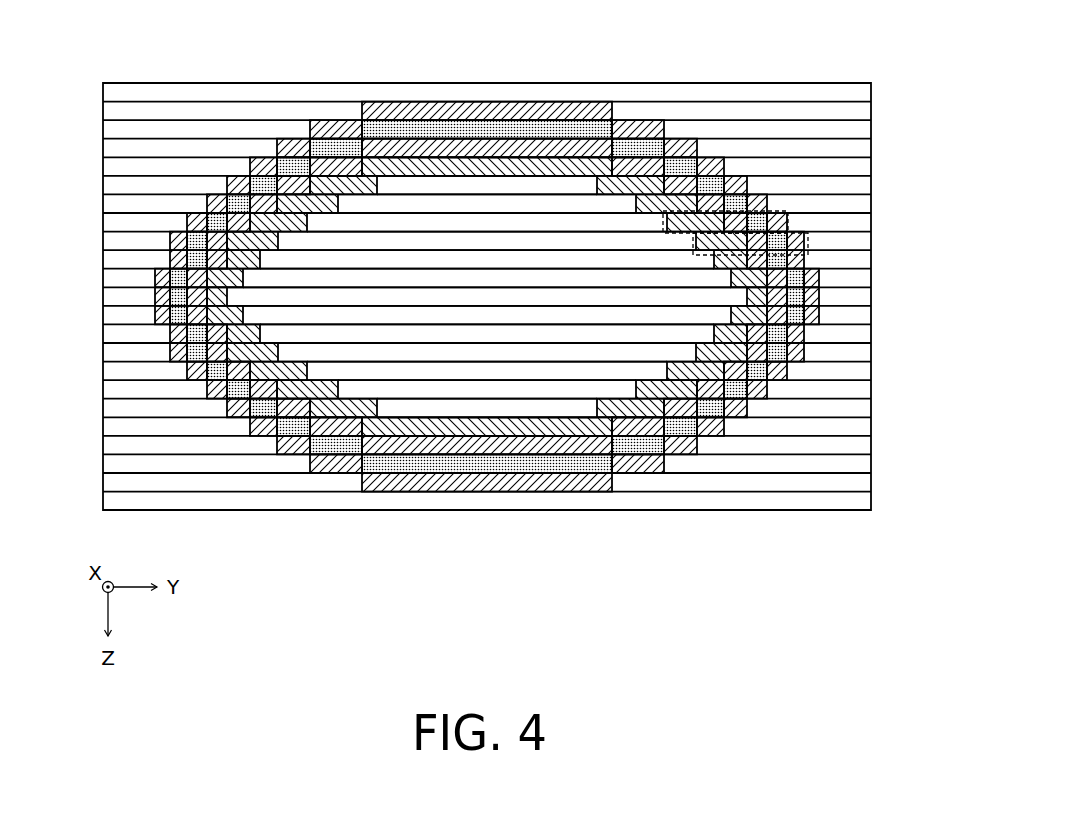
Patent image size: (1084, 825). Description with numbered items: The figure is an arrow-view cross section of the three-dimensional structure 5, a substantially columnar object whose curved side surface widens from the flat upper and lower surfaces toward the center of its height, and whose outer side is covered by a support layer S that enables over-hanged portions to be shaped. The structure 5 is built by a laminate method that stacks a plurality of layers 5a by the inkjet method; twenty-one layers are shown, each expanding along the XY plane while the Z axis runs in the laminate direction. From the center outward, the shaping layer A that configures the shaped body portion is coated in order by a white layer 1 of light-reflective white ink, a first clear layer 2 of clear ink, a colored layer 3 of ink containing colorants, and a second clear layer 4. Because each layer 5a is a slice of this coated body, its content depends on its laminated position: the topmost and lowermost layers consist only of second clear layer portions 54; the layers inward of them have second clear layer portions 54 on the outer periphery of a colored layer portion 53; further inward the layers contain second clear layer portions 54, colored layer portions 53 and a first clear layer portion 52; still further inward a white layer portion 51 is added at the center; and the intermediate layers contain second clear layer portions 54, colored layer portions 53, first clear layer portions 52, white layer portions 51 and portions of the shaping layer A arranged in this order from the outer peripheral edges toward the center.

The white layer 1 is at (487, 426).
The first clear layer 2 is at (640, 426).
The colored layer 3 is at (680, 426).
The second clear layer 4 is at (710, 426).
The three-dimensional structure 5 is at (462, 274).
The layer 5a is at (95, 92).
The white layer portion 51 is at (487, 298).
The first clear layer portion 52 is at (487, 298).
The colored layer portion 53 is at (487, 298).
The second clear layer portion 54 is at (487, 298).
The shaping layer A is at (410, 409).
The support layer S is at (833, 86).